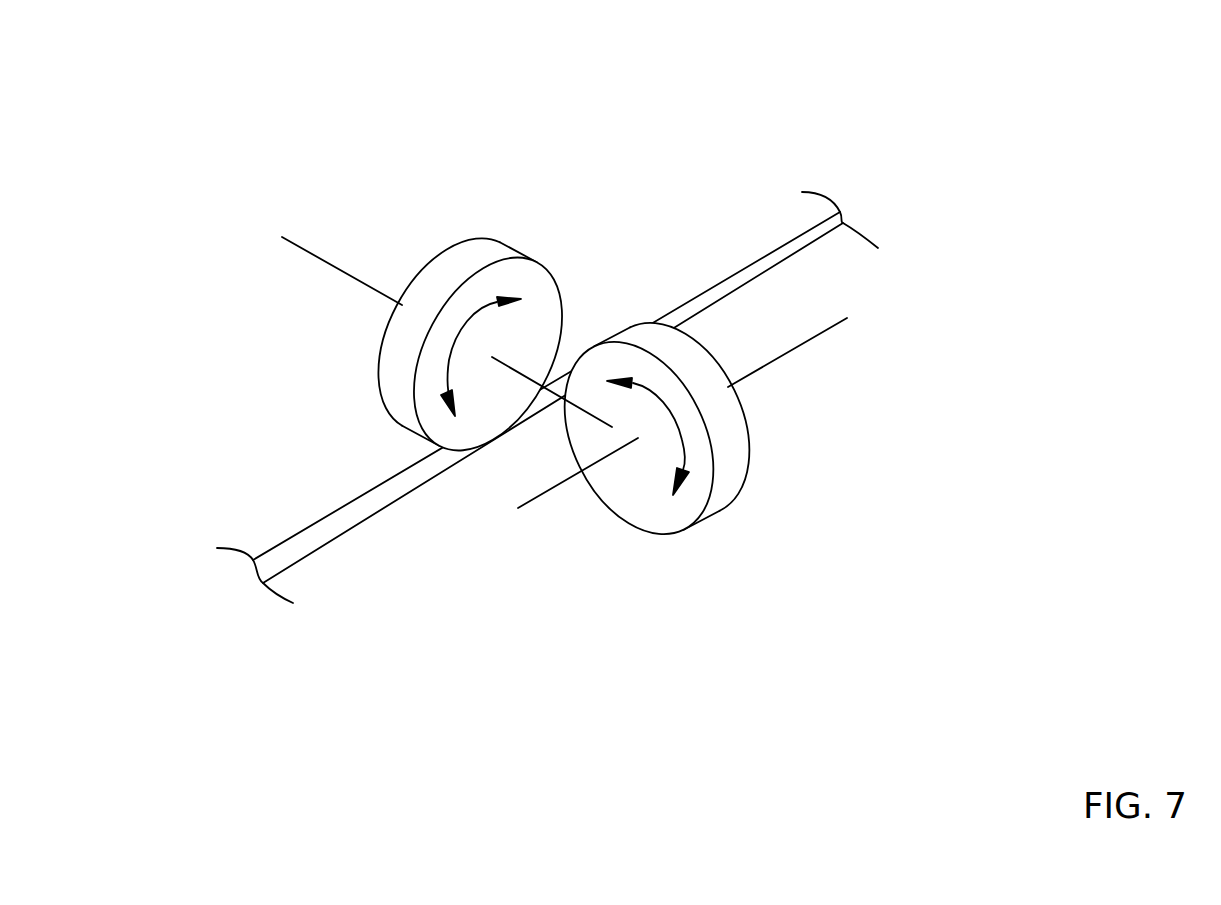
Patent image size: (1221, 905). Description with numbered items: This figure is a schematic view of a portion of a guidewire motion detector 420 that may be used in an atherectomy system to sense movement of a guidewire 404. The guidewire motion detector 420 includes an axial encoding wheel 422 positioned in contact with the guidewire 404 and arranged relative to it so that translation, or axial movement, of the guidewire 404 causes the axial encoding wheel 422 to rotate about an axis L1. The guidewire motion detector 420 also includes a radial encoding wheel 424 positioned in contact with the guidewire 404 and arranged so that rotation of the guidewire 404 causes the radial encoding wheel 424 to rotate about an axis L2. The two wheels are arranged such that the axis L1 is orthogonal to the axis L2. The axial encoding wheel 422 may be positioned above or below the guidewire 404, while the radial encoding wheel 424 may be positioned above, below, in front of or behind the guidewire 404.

The guidewire motion detector 420 is at (426, 110).
The guidewire 404 is at (748, 265).
The axial encoding wheel 422 is at (390, 370).
The radial encoding wheel 424 is at (740, 458).
The axis L1 is at (307, 253).
The axis L2 is at (824, 334).